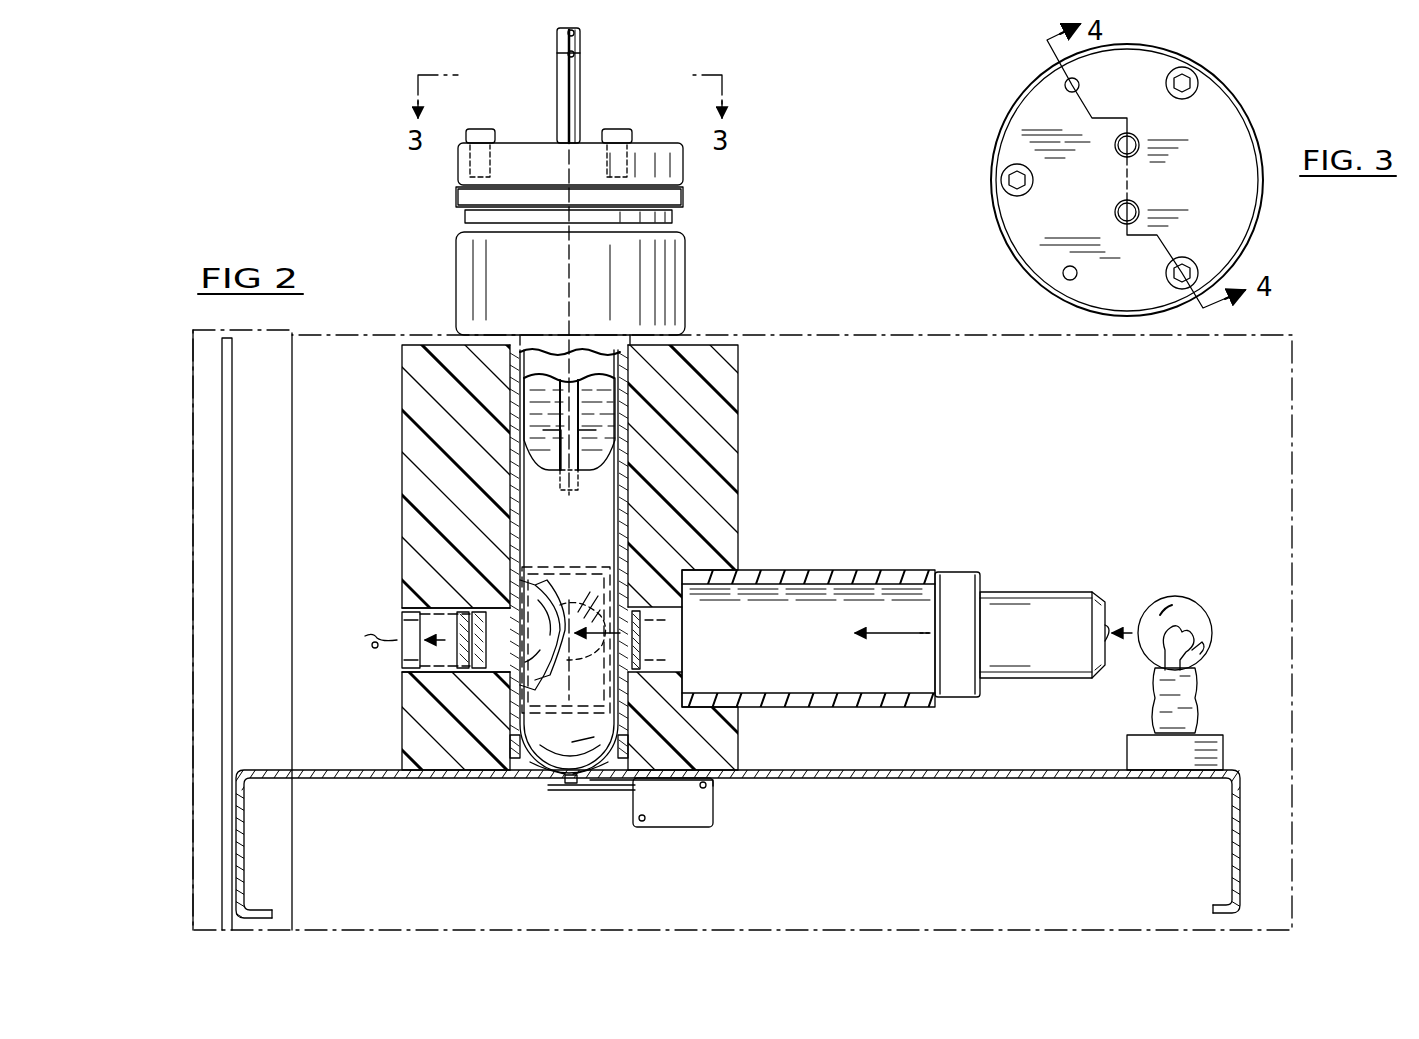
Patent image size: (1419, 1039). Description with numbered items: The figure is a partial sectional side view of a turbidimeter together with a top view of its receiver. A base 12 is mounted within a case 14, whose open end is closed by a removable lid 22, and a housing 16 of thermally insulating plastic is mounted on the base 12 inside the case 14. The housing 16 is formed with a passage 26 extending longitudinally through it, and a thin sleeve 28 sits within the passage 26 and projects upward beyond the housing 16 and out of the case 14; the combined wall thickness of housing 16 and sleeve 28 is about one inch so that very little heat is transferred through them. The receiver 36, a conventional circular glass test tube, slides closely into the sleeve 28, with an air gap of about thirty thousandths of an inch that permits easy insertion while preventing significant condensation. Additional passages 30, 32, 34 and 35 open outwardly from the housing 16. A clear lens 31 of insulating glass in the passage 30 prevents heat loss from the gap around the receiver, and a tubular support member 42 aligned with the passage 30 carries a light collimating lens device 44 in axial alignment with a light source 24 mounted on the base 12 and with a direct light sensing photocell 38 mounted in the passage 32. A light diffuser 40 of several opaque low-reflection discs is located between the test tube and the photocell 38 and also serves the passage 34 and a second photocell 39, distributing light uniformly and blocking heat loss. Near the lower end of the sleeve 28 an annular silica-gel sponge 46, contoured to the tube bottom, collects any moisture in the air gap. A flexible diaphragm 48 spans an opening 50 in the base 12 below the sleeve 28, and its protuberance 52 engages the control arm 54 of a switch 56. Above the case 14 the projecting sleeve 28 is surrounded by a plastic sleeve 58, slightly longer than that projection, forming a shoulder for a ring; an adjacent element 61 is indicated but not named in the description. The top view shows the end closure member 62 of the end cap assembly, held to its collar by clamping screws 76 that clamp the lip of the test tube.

In FIG. 2, the base 12 is at (848, 778).
In FIG. 2, the case 14 is at (938, 328).
In FIG. 2, the housing 16 is at (716, 440).
In FIG. 2, the removable lid 22 is at (193, 402).
In FIG. 2, the light source 24 is at (1175, 595).
In FIG. 2, the passage 26 is at (628, 412).
In FIG. 2, the sleeve 28 is at (628, 378).
In FIG. 2, the passage 30 is at (688, 622).
In FIG. 2, the clear lens 31 is at (645, 652).
In FIG. 2, the passage 32 is at (430, 605).
In FIG. 2, the passage 34 is at (543, 596).
In FIG. 2, the passage 35 is at (500, 565).
In FIG. 2, the receiver 36 is at (528, 488).
In FIG. 2, the direct light sensing photocell 38 is at (407, 630).
In FIG. 2, the photocell 39 is at (572, 605).
In FIG. 2, the light diffuser 40 is at (455, 660).
In FIG. 2, the tubular support member 42 is at (900, 570).
In FIG. 2, the light collimating lens device 44 is at (1043, 592).
In FIG. 2, the annular sponge 46 is at (503, 760).
In FIG. 2, the flexible diaphragm 48 is at (540, 775).
In FIG. 2, the opening 50 is at (593, 786).
In FIG. 2, the protuberance 52 is at (567, 778).
In FIG. 2, the control arm 54 is at (617, 790).
In FIG. 2, the switch 56 is at (710, 827).
In FIG. 2, the sleeve 58 is at (456, 265).
In FIG. 2, the lock ring 61 is at (692, 185).
In FIG. 3, the end closure member 62 is at (1008, 222).
In FIG. 3, the clamping screws 76 is at (1003, 175).